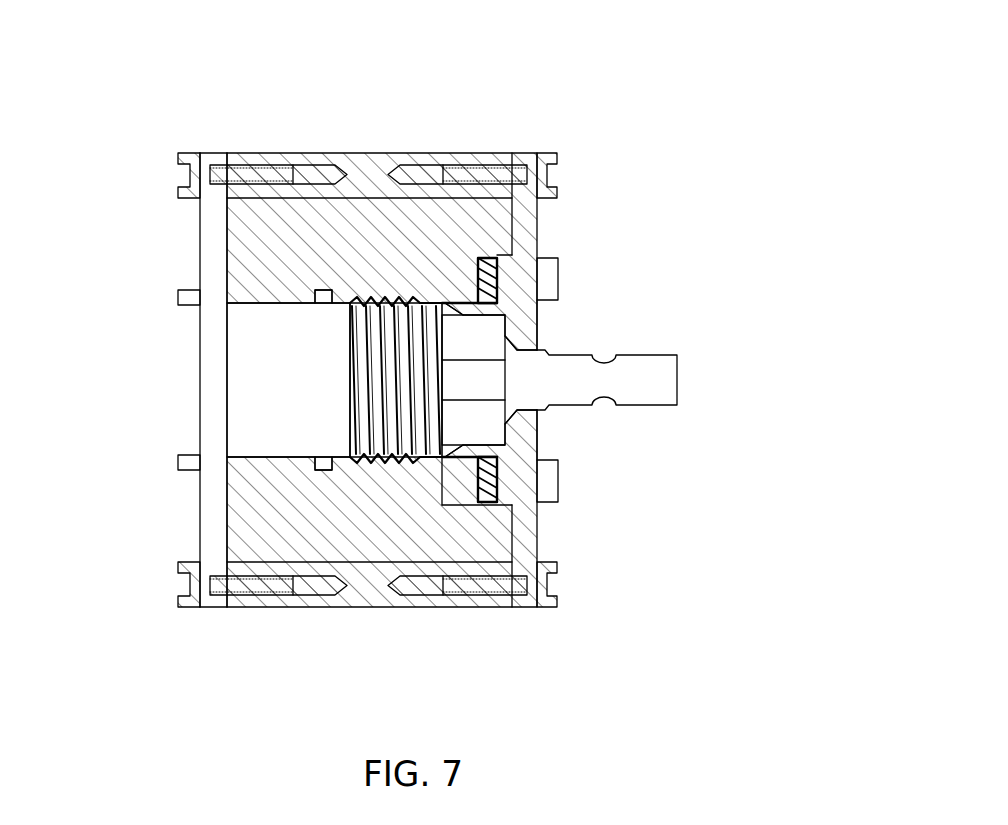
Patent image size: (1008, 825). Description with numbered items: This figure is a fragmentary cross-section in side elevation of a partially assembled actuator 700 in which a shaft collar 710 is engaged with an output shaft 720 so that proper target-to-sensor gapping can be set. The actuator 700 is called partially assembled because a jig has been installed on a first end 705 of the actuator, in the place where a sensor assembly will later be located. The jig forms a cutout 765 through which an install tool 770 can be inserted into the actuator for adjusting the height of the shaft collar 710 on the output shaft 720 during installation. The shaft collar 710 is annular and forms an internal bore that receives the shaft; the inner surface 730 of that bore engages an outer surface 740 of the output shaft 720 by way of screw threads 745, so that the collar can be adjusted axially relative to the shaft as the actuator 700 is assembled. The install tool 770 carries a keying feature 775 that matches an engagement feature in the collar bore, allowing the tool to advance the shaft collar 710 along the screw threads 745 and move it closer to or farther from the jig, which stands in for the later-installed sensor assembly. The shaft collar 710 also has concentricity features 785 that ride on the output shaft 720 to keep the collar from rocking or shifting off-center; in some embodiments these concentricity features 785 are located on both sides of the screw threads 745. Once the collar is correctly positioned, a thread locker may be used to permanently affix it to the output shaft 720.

The actuator 700 is at (560, 41).
The first end 705 is at (560, 170).
The shaft collar 710 is at (457, 268).
The output shaft 720 is at (265, 335).
The inner surface 730 is at (427, 297).
The outer surface 740 is at (345, 381).
The screw threads 745 is at (415, 368).
The cutout 765 is at (542, 329).
The install tool 770 is at (637, 362).
The keying feature 775 is at (490, 418).
The concentricity features 785 is at (330, 303).